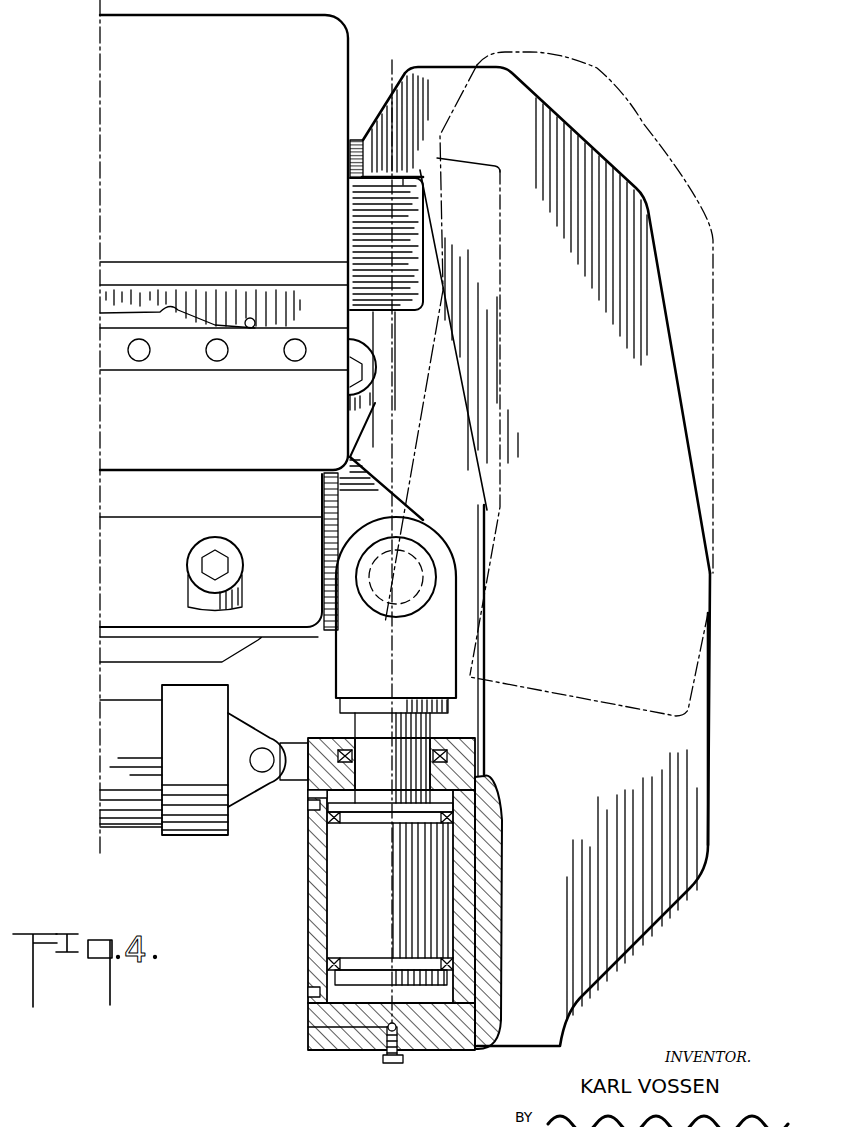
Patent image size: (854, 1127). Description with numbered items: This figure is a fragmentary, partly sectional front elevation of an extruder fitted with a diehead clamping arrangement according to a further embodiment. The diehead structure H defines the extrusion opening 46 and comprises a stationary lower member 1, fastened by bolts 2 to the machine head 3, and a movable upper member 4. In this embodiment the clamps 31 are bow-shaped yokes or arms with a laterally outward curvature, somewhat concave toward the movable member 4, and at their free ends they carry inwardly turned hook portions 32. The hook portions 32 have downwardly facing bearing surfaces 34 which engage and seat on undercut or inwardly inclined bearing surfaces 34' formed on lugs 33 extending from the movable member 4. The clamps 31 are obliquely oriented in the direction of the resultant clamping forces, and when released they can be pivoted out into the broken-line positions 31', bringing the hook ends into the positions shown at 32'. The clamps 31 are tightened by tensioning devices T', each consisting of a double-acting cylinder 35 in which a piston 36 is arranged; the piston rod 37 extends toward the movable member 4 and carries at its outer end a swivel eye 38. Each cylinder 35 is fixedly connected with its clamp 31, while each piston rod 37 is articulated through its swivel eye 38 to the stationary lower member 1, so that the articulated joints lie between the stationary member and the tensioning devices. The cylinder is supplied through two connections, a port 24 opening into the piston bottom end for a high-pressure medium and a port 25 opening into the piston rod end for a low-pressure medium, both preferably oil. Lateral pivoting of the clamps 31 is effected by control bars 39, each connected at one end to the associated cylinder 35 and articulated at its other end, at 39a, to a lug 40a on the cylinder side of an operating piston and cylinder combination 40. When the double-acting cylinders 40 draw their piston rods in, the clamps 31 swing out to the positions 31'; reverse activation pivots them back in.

The stationary lower member 1 is at (118, 382).
The bolts 2 is at (372, 388).
The machine head 3 is at (365, 437).
The movable upper member 4 is at (110, 172).
The diehead structure H is at (83, 250).
The extrusion opening 46 is at (108, 320).
The connection or port 24 is at (310, 998).
The connection or port 25 is at (312, 805).
The clamps 31 is at (624, 777).
The broken-line positions of clamps 31' is at (641, 477).
The hook portions 32 is at (530, 295).
The hook end positions 32' is at (549, 319).
The lugs 33 is at (355, 225).
The bearing surfaces 34 is at (492, 399).
The bearing surfaces 34' is at (446, 306).
The double-acting cylinders 35 is at (316, 890).
The pistons 36 is at (343, 923).
The piston rods 37 is at (420, 727).
The swivel eyes 38 is at (470, 642).
The control bars 39 is at (290, 745).
The articulation 39a is at (262, 749).
The operating piston and cylinder combination 40 is at (137, 820).
The lug 40a is at (245, 793).
The tensioning devices T' is at (259, 963).